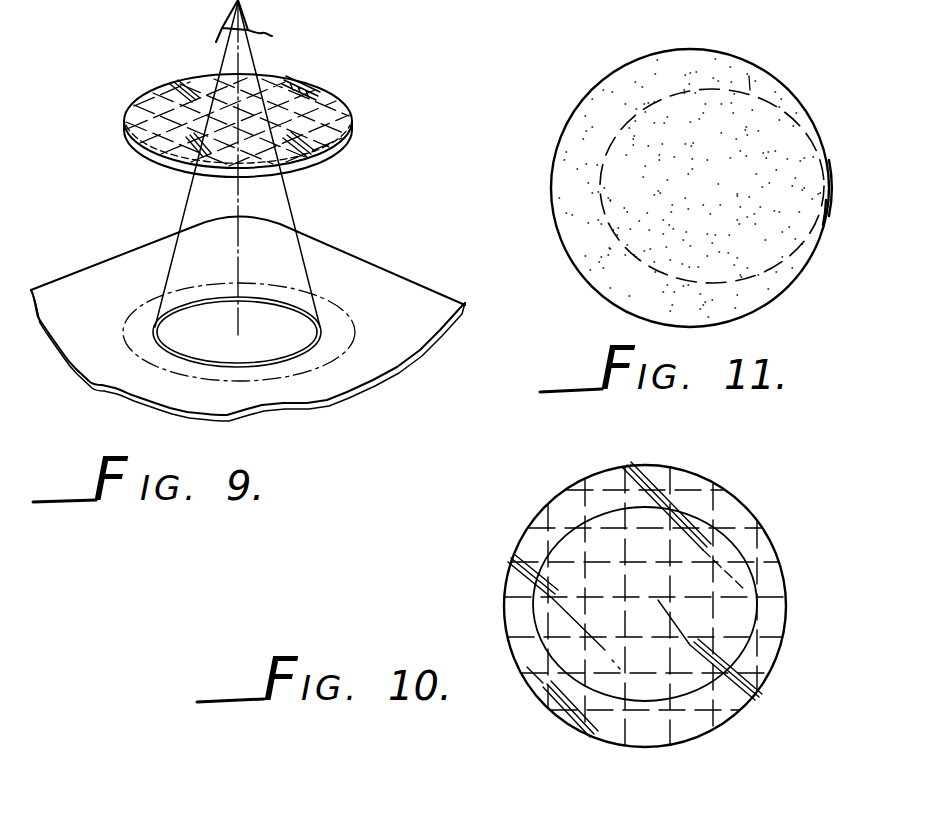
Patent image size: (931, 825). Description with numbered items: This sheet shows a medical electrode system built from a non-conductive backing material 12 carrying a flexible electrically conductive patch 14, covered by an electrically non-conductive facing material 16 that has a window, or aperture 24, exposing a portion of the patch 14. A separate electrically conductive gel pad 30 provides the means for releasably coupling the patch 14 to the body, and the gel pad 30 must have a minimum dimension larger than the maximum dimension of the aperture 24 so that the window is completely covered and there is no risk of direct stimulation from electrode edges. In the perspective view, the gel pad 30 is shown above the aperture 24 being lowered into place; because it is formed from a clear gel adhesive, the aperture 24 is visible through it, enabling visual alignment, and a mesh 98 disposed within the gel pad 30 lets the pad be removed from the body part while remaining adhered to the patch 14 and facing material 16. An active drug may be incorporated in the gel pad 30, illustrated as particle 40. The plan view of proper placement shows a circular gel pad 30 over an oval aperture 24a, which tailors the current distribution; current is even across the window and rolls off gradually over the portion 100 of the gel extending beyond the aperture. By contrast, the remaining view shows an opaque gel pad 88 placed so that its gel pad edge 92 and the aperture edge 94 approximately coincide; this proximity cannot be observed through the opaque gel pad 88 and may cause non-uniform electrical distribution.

In FIG. 9, the non-conductive backing material 12 is at (355, 338).
In FIG. 9, the electrically conductive patch 14 is at (212, 339).
In FIG. 9, the facing material 16 is at (418, 295).
In FIG. 9, the aperture 24 is at (298, 303).
In FIG. 11, the aperture 24 is at (756, 70).
In FIG. 10, the oval aperture 24a is at (752, 575).
In FIG. 9, the gel pad 30 is at (333, 108).
In FIG. 10, the gel pad 30 is at (752, 535).
In FIG. 9, the particle 40 is at (302, 84).
In FIG. 11, the opaque gel pad 88 is at (690, 52).
In FIG. 11, the gel pad edge 92 is at (830, 172).
In FIG. 11, the aperture edge 94 is at (828, 196).
In FIG. 9, the mesh 98 is at (347, 143).
In FIG. 10, the portion of the gel extending beyond the aperture 100 is at (718, 498).